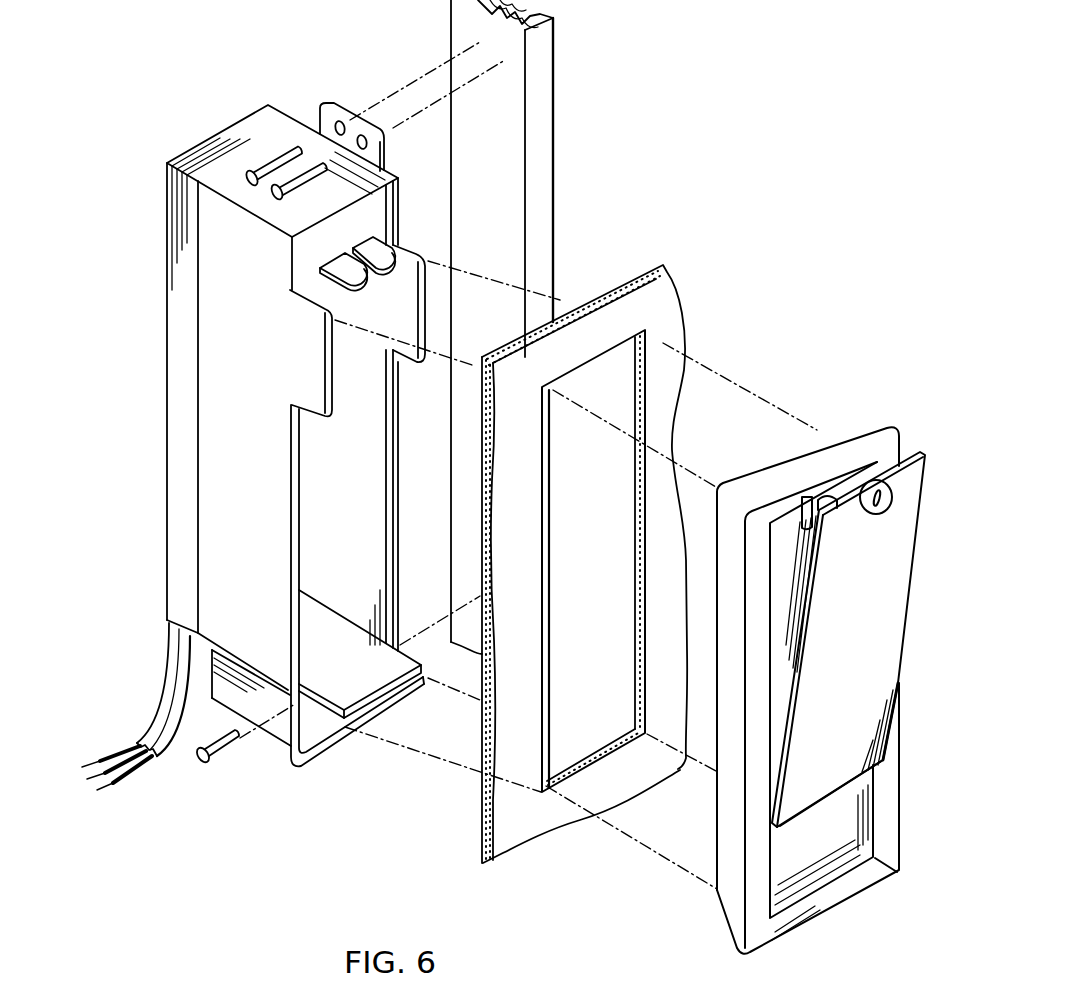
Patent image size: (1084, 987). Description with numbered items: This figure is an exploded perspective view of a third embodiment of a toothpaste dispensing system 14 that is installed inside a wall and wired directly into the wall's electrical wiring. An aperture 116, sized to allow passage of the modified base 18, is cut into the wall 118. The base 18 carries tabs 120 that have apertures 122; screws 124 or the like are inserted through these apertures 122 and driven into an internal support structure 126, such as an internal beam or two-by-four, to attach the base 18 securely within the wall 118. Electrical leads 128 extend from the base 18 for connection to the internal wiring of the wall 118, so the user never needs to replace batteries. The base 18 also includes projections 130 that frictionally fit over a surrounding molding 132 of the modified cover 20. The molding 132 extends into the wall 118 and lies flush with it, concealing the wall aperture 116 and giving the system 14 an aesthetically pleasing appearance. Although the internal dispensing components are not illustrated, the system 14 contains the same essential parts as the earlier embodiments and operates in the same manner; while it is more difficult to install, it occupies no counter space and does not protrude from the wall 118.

The toothpaste dispensing system 14 is at (706, 148).
The base 18 is at (165, 268).
The cover 20 is at (870, 648).
The aperture 116 is at (612, 396).
The wall 118 is at (668, 298).
The tabs 120 is at (320, 124).
The apertures 122 is at (342, 124).
The screws 124 is at (268, 167).
The internal support structure 126 is at (542, 105).
The electrical leads 128 is at (168, 700).
The projections 130 is at (377, 242).
The molding 132 is at (822, 443).